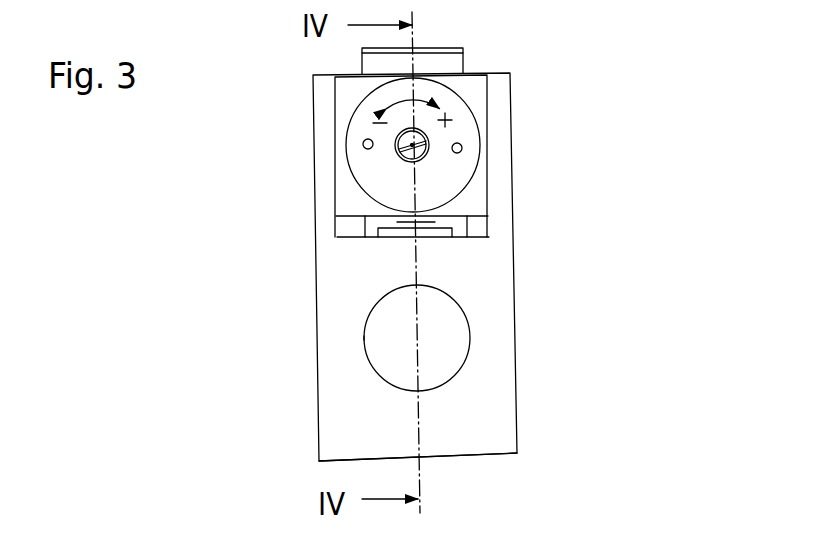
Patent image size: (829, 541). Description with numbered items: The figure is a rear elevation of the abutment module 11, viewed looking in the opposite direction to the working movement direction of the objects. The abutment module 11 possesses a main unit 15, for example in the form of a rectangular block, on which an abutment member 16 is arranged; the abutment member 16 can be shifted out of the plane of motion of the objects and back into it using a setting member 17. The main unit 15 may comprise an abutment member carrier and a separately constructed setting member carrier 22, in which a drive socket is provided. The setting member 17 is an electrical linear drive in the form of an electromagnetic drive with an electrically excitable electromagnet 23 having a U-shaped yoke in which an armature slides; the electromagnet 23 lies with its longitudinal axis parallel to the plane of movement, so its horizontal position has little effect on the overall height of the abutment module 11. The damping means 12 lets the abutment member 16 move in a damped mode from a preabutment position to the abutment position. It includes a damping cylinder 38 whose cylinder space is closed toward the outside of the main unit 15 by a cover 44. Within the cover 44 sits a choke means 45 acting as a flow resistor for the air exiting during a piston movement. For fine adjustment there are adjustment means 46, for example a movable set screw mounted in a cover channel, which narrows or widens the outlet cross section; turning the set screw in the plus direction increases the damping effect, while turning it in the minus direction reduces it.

The abutment module 11 is at (605, 130).
The damping means 12 is at (473, 101).
The main unit 15 is at (516, 318).
The abutment member 16 is at (447, 62).
The setting member 17 is at (363, 353).
The setting member carrier 22 is at (498, 380).
The electromagnet 23 is at (438, 317).
The damping cylinder 38 is at (457, 180).
The cover 44 is at (363, 162).
The choke means 45 is at (403, 160).
The adjustment means 46 is at (429, 147).